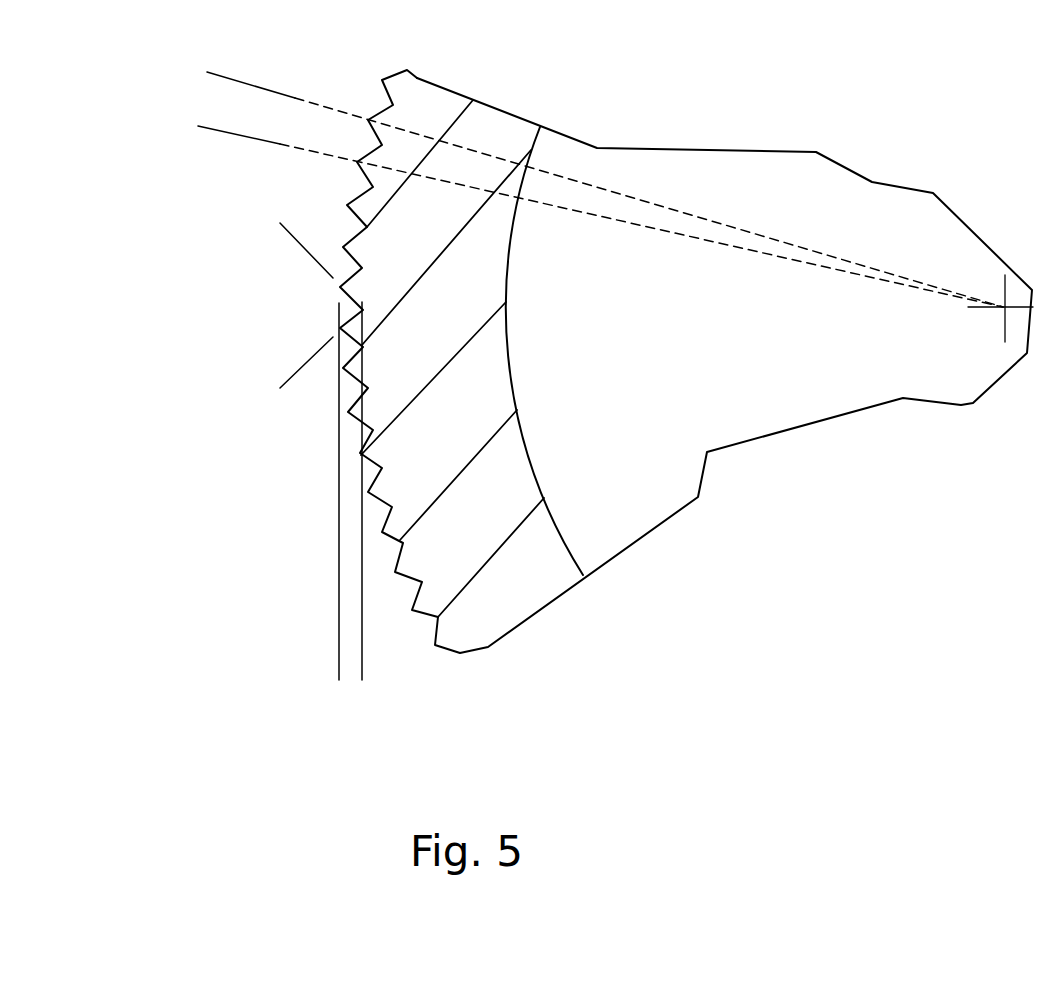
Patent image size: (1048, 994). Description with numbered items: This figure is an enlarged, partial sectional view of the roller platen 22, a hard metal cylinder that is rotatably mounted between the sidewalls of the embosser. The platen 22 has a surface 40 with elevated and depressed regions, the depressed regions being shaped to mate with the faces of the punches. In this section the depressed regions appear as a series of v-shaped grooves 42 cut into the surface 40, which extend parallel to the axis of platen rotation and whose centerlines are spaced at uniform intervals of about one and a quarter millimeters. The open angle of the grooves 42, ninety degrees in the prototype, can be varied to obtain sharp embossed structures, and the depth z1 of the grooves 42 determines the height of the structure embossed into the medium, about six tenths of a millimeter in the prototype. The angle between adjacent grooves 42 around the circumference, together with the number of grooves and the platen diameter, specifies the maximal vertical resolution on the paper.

The platen 22 is at (524, 630).
The surface 40 is at (397, 396).
The grooves 42 is at (373, 145).
The groove depth z1 is at (400, 657).